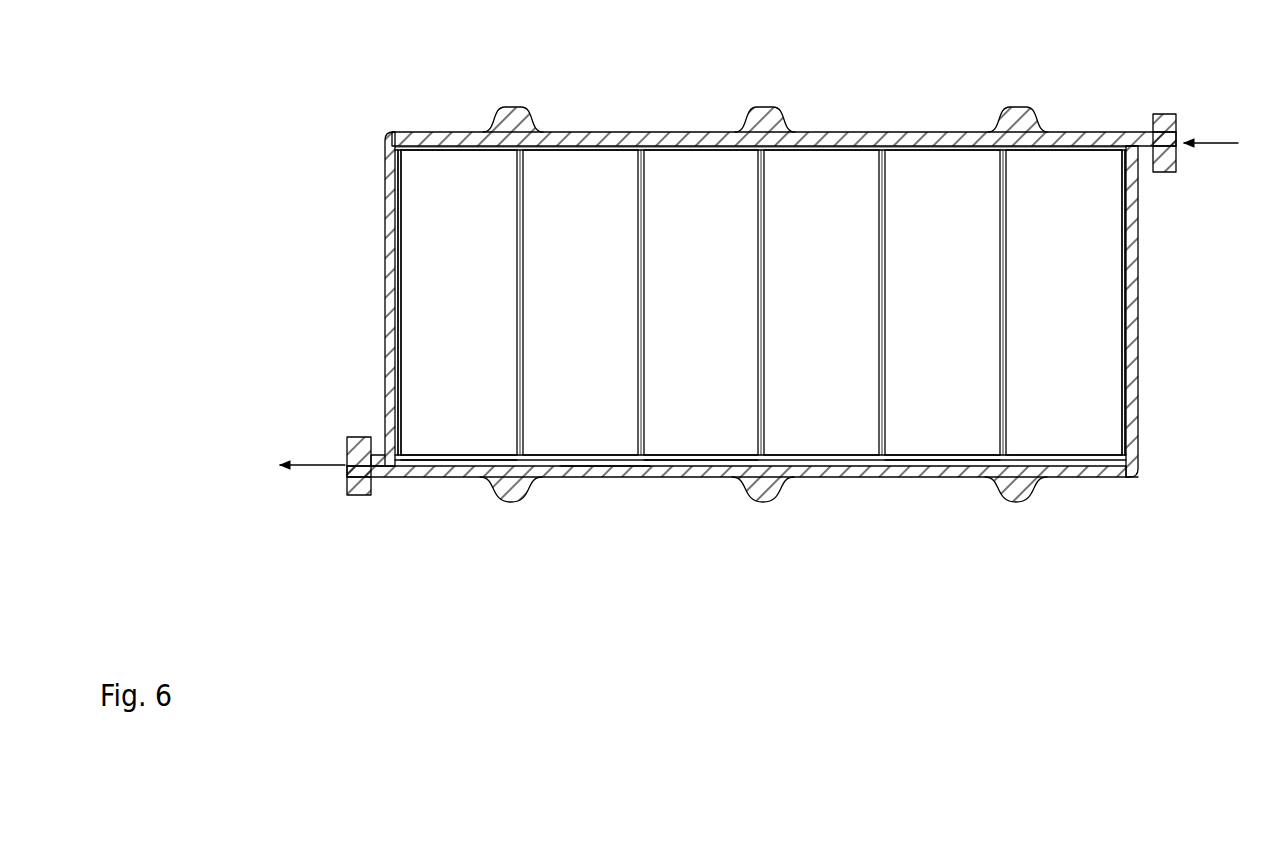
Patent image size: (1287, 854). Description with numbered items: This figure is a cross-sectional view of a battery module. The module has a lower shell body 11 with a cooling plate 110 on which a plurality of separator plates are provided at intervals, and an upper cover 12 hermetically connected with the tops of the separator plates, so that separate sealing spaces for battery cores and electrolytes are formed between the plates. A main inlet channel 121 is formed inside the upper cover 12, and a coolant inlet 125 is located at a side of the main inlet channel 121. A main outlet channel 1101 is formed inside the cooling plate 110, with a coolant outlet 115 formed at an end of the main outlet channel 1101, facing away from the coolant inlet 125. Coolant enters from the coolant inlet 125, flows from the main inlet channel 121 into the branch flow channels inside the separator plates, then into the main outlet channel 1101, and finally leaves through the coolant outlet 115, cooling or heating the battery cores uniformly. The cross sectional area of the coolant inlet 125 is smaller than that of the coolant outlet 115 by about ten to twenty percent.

The lower shell body 11 is at (665, 483).
The upper cover 12 is at (889, 129).
The cooling plate 110 is at (872, 478).
The main outlet channel 1101 is at (603, 467).
The coolant outlet 115 is at (355, 447).
The main inlet channel 121 is at (688, 131).
The coolant inlet 125 is at (1168, 124).